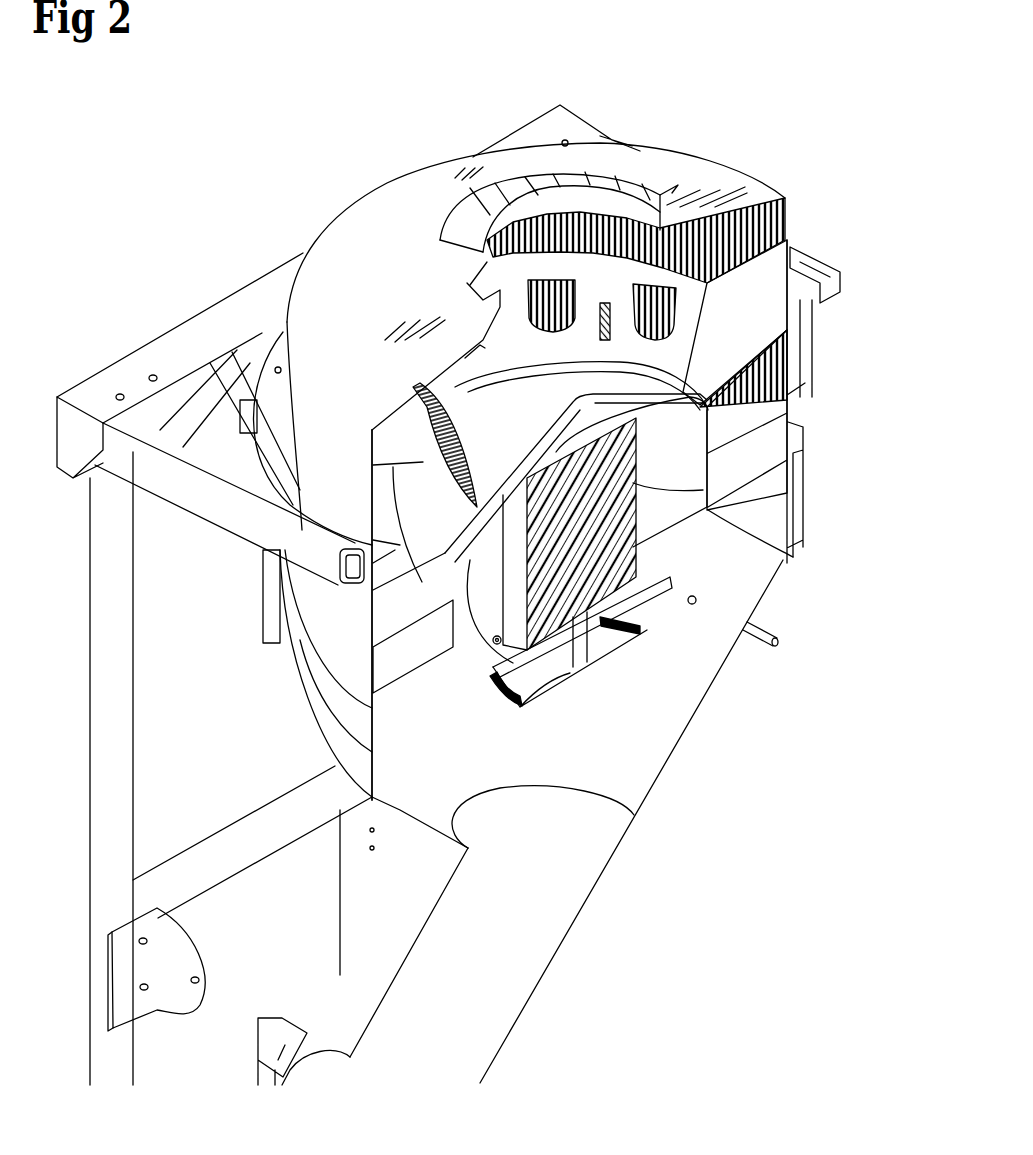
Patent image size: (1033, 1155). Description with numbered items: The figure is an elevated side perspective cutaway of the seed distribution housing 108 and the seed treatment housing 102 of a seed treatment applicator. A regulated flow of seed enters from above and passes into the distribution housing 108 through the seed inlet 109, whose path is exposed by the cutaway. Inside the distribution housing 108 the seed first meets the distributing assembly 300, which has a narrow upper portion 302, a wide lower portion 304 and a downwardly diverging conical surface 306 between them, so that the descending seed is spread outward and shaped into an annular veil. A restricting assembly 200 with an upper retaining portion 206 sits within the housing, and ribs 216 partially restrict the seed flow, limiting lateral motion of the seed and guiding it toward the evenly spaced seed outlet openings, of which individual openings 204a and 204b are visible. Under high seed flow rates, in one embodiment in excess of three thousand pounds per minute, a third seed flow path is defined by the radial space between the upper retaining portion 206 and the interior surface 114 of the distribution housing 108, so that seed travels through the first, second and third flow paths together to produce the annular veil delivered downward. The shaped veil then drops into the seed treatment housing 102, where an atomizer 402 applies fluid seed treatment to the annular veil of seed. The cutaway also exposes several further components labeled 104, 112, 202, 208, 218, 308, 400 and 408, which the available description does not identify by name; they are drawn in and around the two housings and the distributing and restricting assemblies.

The seed treatment housing 102 is at (752, 418).
The back plate 104 is at (800, 398).
The seed distribution housing 108 is at (730, 170).
The seed inlet 109 is at (640, 167).
The bracket 112 is at (793, 297).
The interior surface 114 is at (770, 227).
The restricting assembly 200 is at (427, 407).
The pole tip 202 is at (450, 390).
The seed outlet opening 204a is at (672, 327).
The seed outlet opening 204b is at (530, 289).
The upper retaining portion 206 is at (594, 278).
The rotor rim 208 is at (591, 361).
The ribs 216 is at (634, 306).
The end face 218 is at (757, 313).
The distributing assembly 300 is at (643, 404).
The narrow upper portion 302 is at (583, 400).
The wide lower portion 304 is at (427, 540).
The downwardly diverging conical surface 306 is at (508, 469).
The plate 308 is at (431, 658).
The frame 400 is at (217, 303).
The atomizer 402 is at (587, 667).
The base plate 408 is at (642, 786).